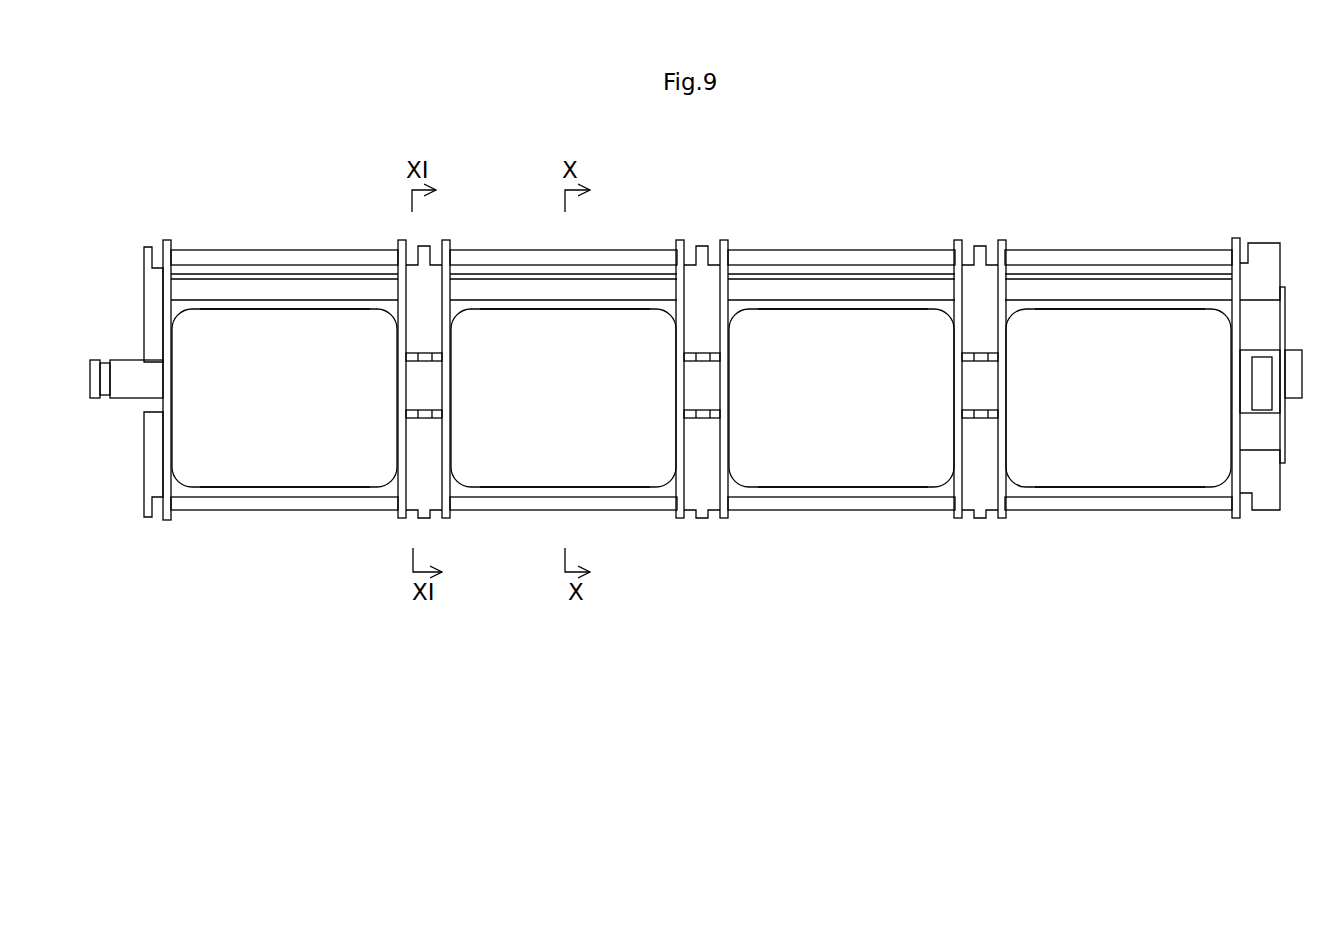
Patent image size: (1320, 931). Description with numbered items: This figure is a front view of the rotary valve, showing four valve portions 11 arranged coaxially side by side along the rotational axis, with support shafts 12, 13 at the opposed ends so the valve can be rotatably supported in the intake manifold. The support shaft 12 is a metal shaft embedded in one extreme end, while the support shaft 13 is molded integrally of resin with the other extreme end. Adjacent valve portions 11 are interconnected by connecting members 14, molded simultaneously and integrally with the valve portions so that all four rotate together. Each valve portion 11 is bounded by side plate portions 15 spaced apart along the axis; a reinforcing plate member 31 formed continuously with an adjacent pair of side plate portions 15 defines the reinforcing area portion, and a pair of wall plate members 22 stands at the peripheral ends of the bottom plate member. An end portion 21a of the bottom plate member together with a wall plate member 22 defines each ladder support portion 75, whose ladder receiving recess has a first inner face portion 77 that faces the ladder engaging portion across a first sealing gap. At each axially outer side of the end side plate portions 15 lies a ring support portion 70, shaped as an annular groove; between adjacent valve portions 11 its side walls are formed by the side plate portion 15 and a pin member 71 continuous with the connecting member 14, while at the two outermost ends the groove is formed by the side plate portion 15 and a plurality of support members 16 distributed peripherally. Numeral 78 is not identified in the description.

The valve portion 11 is at (288, 242).
The support shaft 12 is at (120, 398).
The support shaft 13 is at (1293, 352).
The connecting member 14 is at (418, 328).
The side plate portion 15 is at (175, 385).
The support member 16 is at (144, 258).
The end portion of the bottom plate member 21a is at (275, 309).
The wall plate member 22 is at (338, 272).
The reinforcing plate member 31 is at (290, 487).
The ring support portion 70 is at (156, 240).
The pin member 71 is at (702, 247).
The ladder support portion 75 is at (1175, 272).
The first inner face portion 77 is at (207, 300).
The cover plate 78 is at (260, 290).